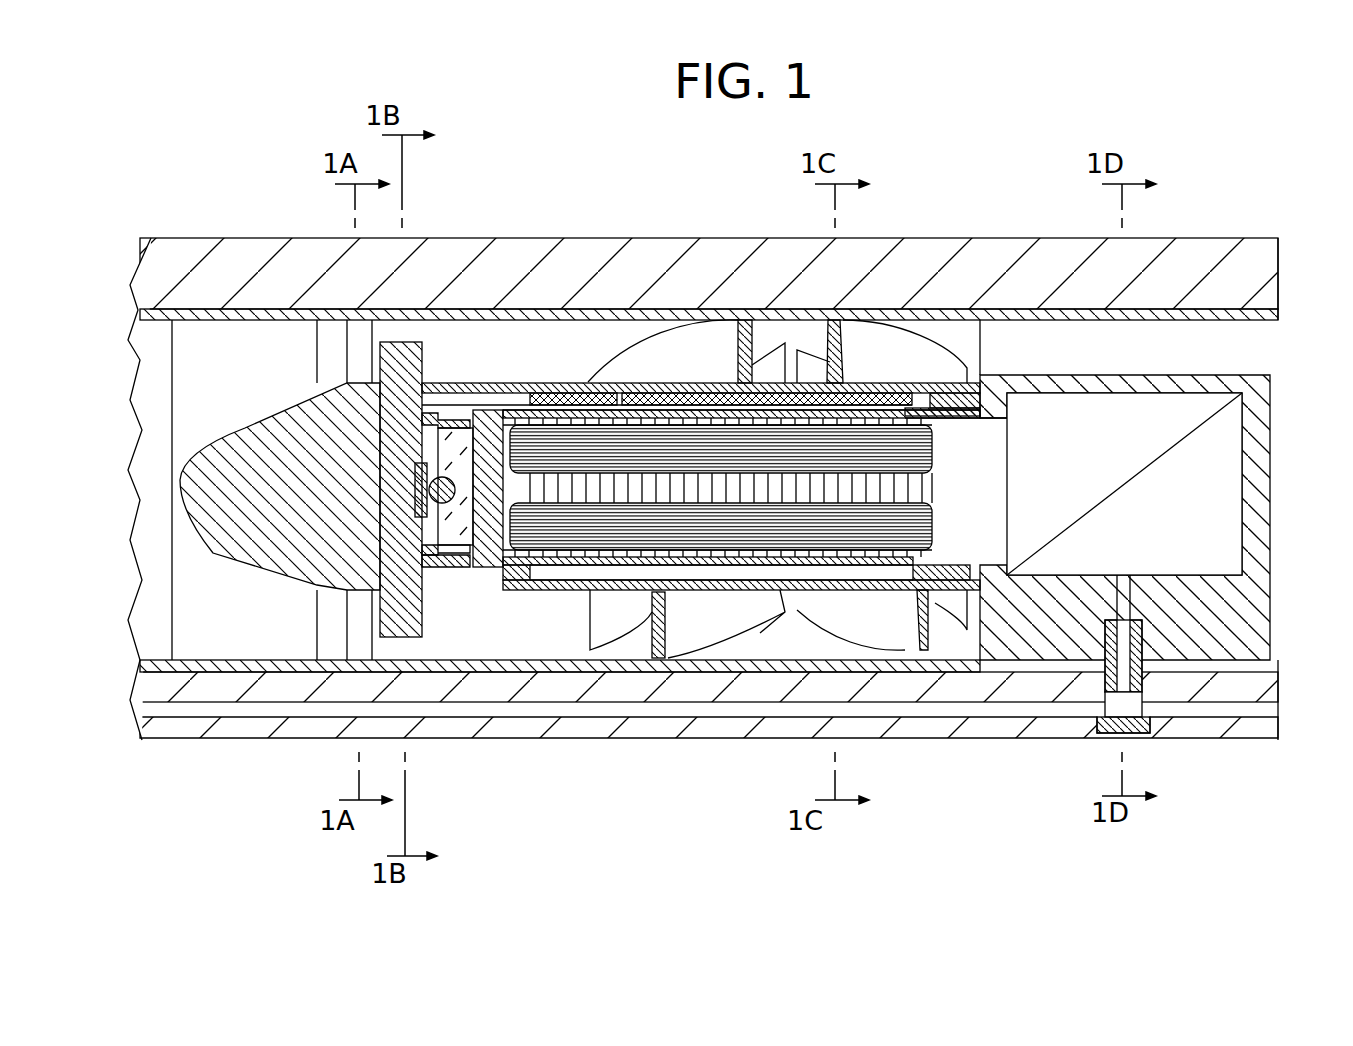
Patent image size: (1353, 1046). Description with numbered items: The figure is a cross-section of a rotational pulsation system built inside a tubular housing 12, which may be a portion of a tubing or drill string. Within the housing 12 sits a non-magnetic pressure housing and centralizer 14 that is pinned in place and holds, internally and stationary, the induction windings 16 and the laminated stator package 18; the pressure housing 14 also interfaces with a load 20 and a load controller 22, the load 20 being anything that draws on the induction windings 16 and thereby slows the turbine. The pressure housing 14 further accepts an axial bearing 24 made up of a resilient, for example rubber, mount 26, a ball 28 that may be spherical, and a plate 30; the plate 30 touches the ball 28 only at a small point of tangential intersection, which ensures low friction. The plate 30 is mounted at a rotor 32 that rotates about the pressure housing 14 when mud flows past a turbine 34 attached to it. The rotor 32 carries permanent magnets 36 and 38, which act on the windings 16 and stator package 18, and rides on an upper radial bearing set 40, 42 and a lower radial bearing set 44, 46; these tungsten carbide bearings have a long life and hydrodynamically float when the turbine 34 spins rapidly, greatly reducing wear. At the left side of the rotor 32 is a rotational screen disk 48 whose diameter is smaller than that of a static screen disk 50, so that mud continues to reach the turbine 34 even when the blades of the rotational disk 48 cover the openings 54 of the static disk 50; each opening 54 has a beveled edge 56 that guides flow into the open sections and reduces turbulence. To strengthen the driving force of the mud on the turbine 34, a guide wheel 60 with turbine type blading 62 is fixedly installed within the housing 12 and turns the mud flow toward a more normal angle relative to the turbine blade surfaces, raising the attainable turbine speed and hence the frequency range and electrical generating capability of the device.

The housing 12 is at (758, 250).
The non-magnetic pressure housing and centralizer 14 is at (1200, 663).
The induction windings 16 is at (932, 528).
The laminated stator package 18 is at (808, 555).
The load 20 is at (1064, 452).
The load controller 22 is at (1147, 548).
The axial bearing 24 is at (420, 443).
The resilient mount 26 is at (474, 568).
The ball 28 is at (432, 568).
The plate 30 is at (430, 490).
The rotor 32 is at (512, 383).
The turbine 34 is at (878, 333).
The permanent magnet 36 is at (758, 578).
The permanent magnet 38 is at (840, 388).
The upper radial bearing 40 is at (430, 412).
The upper radial bearing 42 is at (468, 412).
The lower radial bearing 44 is at (968, 396).
The lower radial bearing 46 is at (965, 410).
The rotational screen disk 48 is at (400, 345).
The static screen disk 50 is at (338, 655).
The opening 54 is at (356, 374).
The beveled edge 56 is at (330, 347).
The guide wheel 60 is at (592, 312).
The turbine type blading 62 is at (683, 340).